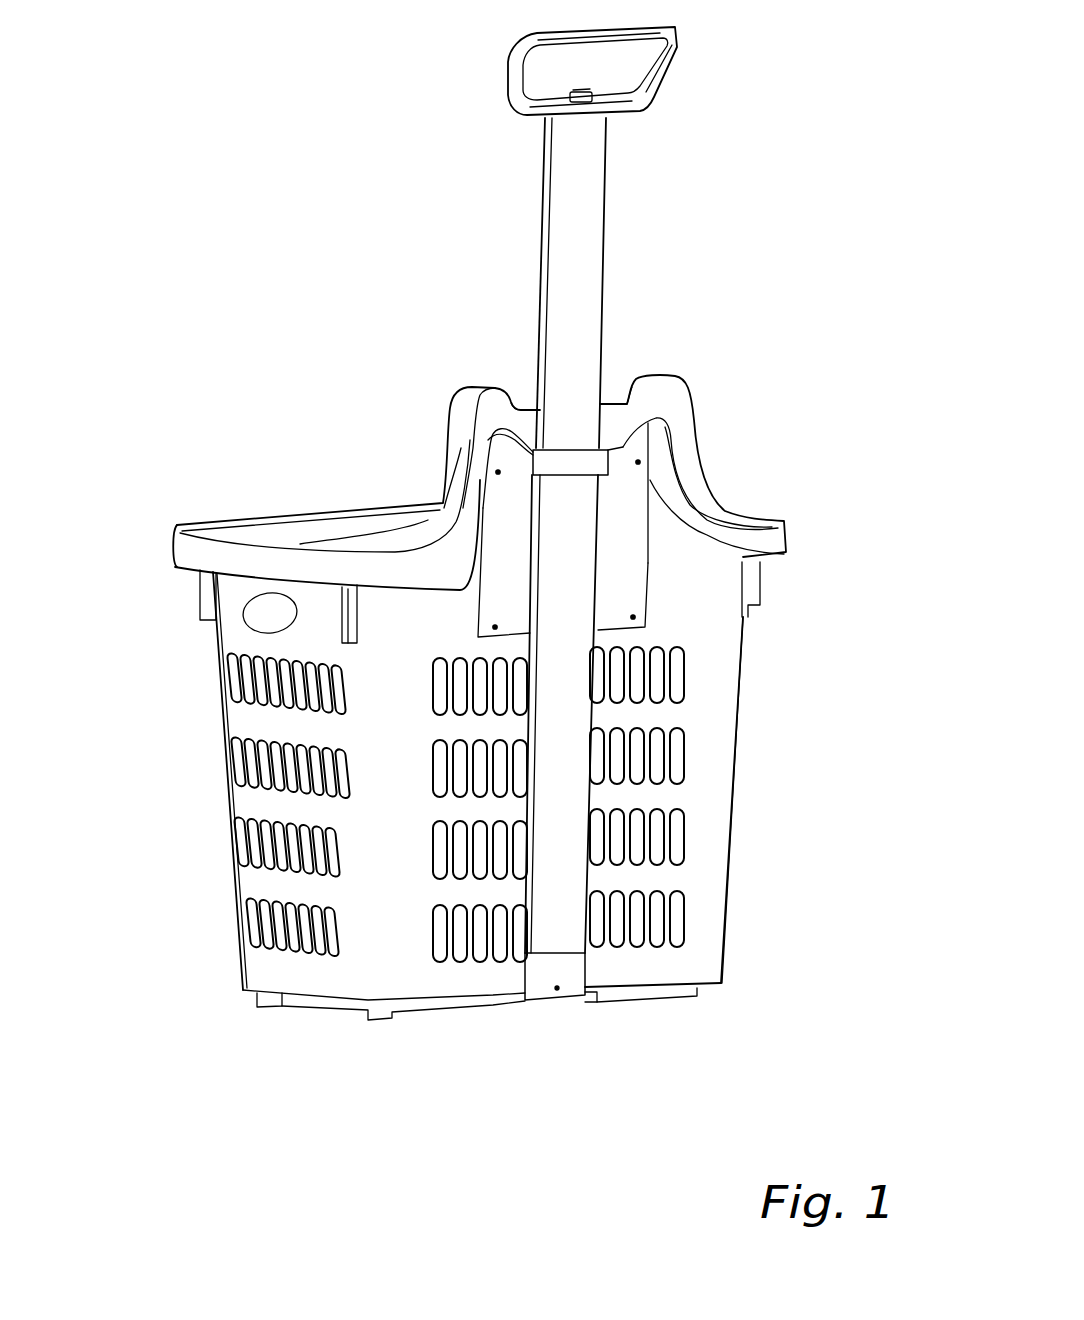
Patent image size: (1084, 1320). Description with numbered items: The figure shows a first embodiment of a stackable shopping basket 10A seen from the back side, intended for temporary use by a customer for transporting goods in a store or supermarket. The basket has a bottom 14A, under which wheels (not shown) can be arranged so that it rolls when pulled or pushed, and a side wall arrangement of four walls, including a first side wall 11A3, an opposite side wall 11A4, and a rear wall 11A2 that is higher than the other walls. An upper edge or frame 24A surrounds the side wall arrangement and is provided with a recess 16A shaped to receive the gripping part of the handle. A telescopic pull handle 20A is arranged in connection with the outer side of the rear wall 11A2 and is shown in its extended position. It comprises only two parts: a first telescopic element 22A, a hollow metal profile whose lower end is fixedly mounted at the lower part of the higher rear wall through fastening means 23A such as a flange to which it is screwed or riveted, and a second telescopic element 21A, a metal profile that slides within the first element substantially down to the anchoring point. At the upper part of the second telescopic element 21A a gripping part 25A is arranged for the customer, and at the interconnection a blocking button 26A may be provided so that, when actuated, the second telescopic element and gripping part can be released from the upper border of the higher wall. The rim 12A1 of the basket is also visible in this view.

The shopping basket 10A is at (313, 272).
The rear wall 11A2 is at (712, 622).
The first side wall 11A3 is at (207, 796).
The side wall 11A4 is at (750, 822).
The basket rim 12A1 is at (308, 495).
The bottom 14A is at (407, 1040).
The recess 16A is at (525, 388).
The telescopic pull handle 20A is at (603, 574).
The second telescopic element 21A is at (606, 235).
The first telescopic element 22A is at (543, 937).
The fastening means 23A is at (588, 458).
The frame 24A is at (172, 545).
The gripping part 25A is at (672, 68).
The blocking button 26A is at (572, 100).